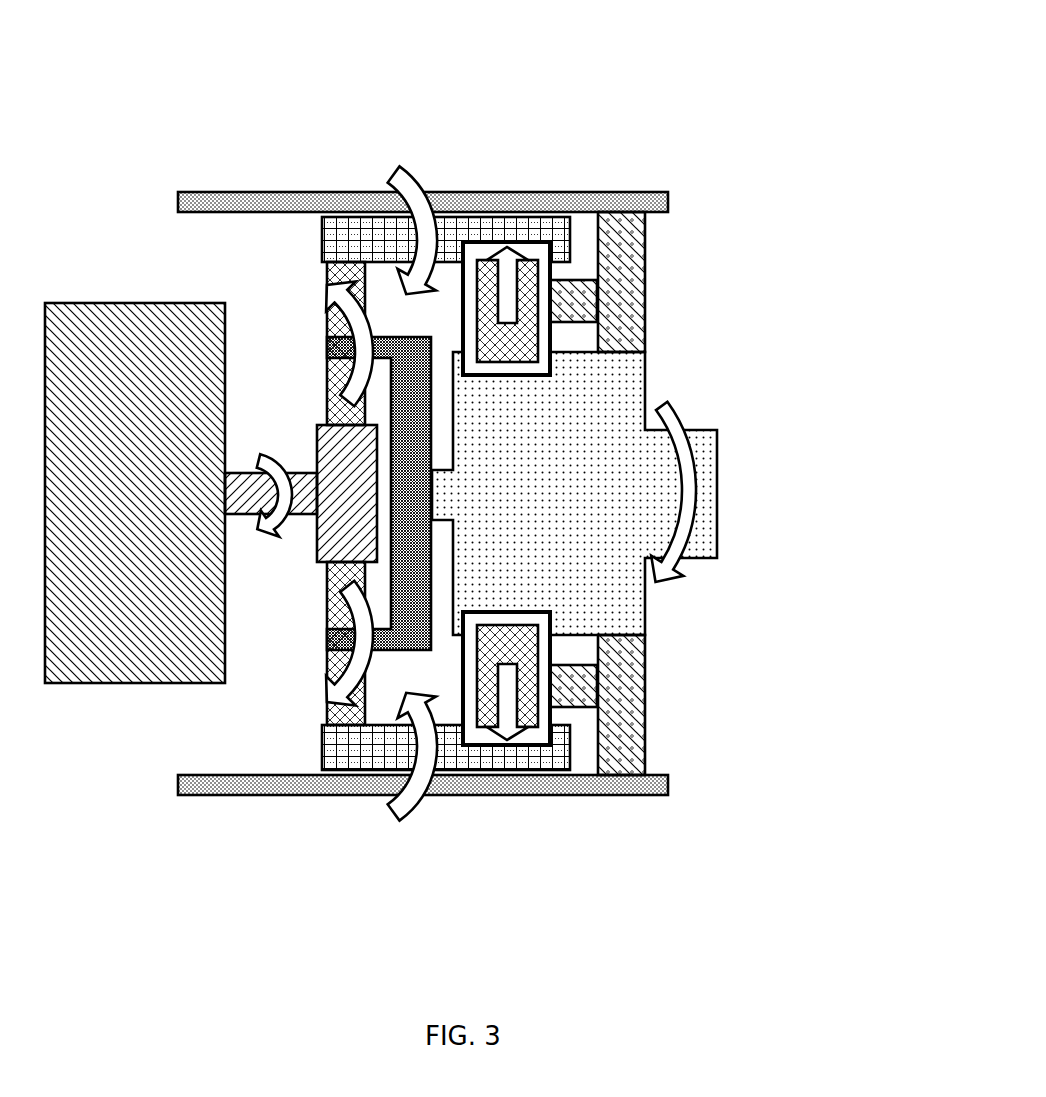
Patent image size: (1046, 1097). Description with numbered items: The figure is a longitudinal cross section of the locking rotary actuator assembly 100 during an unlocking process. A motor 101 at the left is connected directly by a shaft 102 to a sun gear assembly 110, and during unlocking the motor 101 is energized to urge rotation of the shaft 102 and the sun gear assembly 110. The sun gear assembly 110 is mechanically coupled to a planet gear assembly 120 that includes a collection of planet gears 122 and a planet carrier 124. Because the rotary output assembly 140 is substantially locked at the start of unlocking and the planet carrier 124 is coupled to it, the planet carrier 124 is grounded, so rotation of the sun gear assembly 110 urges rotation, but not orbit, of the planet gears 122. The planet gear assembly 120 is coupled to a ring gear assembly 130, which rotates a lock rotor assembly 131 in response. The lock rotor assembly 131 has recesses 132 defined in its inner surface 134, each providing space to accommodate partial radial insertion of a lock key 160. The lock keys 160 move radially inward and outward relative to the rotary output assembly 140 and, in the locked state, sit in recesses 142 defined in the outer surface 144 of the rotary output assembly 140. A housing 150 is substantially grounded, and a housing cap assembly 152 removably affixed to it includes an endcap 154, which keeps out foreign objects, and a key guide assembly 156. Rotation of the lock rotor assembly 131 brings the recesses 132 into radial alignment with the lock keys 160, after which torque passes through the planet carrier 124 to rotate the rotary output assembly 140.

The locking rotary actuator assembly 100 is at (101, 58).
The motor 101 is at (62, 303).
The shaft 102 is at (300, 518).
The sun gear assembly 110 is at (317, 422).
The planet gear assembly 120 is at (248, 288).
The planet gears 122 is at (327, 279).
The planet carrier 124 is at (432, 425).
The ring gear assembly 130 is at (322, 242).
The lock rotor assembly 131 is at (543, 242).
The recesses 132 is at (548, 263).
The inner surface 134 is at (466, 273).
The rotary output assembly 140 is at (717, 546).
The recesses 142 is at (465, 344).
The outer surface 144 is at (578, 352).
The housing 150 is at (185, 193).
The housing cap assembly 152 is at (670, 267).
The endcap 154 is at (648, 292).
The key guide assembly 156 is at (470, 285).
The lock keys 160 is at (513, 362).